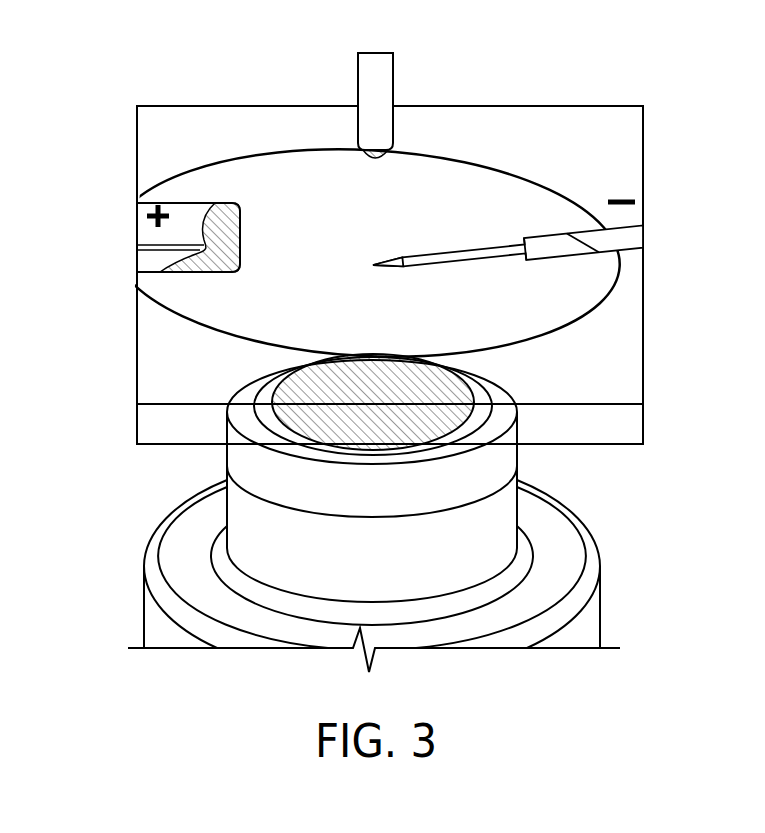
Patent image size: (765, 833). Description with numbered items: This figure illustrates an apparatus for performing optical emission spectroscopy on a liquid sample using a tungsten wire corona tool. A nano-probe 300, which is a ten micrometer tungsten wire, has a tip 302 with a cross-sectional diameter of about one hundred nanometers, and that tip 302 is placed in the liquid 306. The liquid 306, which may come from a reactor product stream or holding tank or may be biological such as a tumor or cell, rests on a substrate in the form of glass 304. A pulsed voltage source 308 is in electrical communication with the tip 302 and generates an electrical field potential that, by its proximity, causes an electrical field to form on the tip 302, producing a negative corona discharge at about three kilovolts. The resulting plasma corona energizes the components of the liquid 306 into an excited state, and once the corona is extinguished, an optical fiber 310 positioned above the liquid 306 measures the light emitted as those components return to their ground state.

The nano-probe 300 is at (582, 230).
The tip 302 is at (418, 256).
The glass 304 is at (623, 351).
The liquid 306 is at (323, 276).
The pulsed voltage source 308 is at (186, 213).
The optical fiber 310 is at (536, 50).